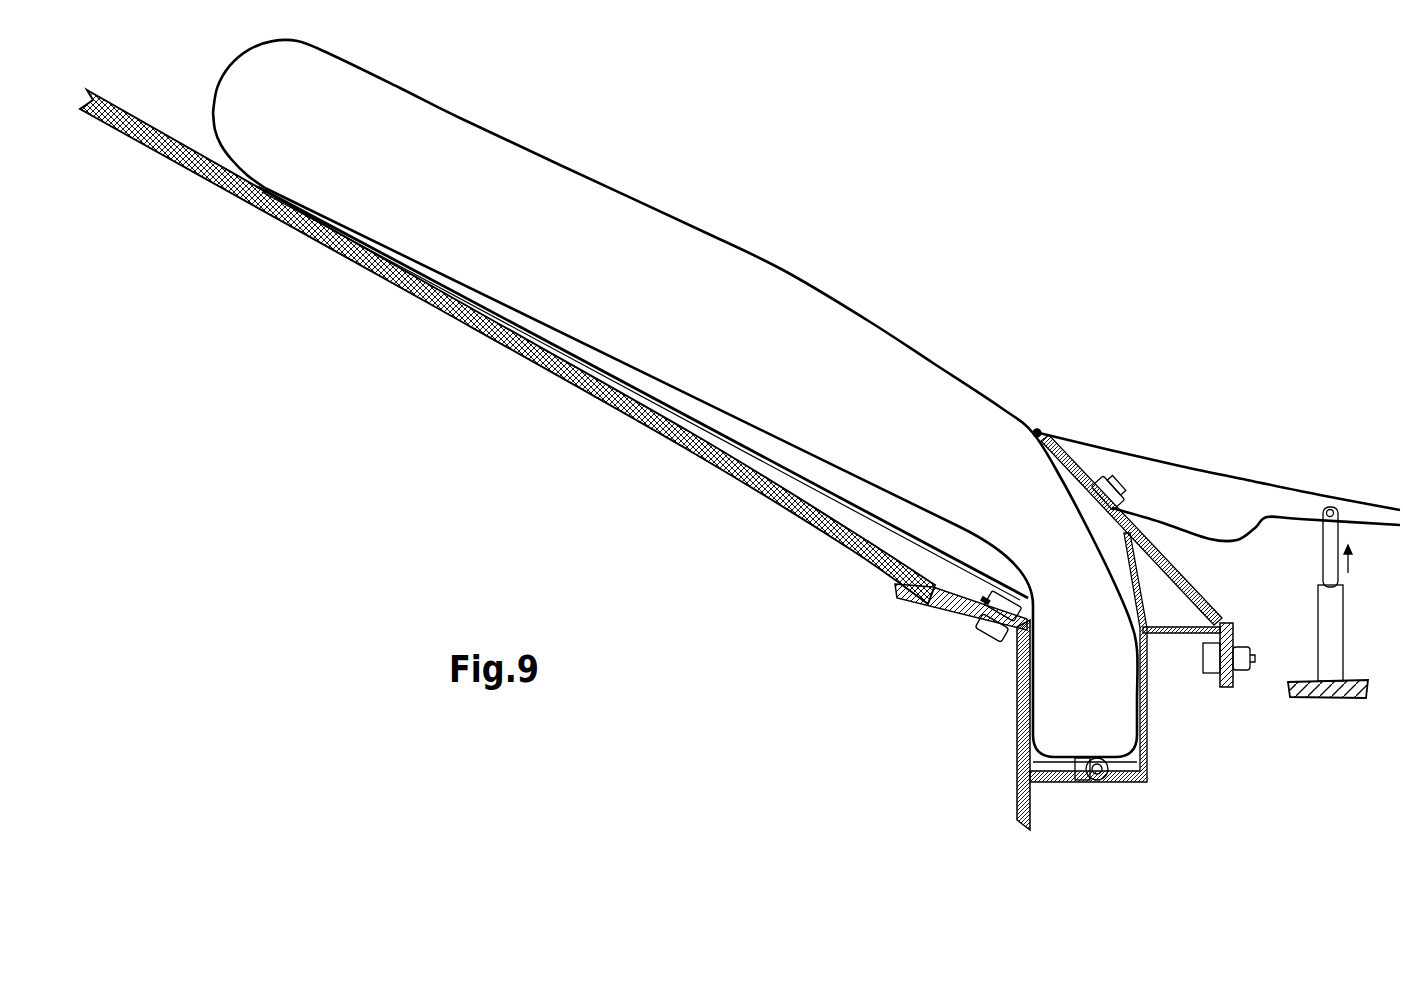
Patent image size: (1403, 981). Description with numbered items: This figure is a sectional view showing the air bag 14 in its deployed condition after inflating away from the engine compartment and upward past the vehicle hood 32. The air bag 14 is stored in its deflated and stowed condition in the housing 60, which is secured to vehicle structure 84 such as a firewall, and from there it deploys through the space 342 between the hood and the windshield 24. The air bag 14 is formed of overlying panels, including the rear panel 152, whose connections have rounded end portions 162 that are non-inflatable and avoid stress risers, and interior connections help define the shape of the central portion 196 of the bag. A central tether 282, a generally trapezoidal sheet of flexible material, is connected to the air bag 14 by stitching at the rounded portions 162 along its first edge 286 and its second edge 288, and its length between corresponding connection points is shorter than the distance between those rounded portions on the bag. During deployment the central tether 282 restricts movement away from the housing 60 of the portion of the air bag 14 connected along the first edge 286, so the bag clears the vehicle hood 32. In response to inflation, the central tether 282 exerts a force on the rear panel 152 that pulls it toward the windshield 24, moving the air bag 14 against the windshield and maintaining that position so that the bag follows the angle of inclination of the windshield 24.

The air bag 14 is at (783, 270).
The windshield 24 is at (187, 160).
The vehicle hood 32 is at (1180, 467).
The housing 60 is at (1147, 760).
The vehicle structure 84 is at (1013, 728).
The rear panel 152 is at (680, 387).
The rounded end portions 162 is at (320, 227).
The central portion 196 is at (1003, 533).
The central tether 282 is at (740, 447).
The first edge 286 is at (285, 210).
The second edge 288 is at (1020, 637).
The space 342 is at (1213, 708).